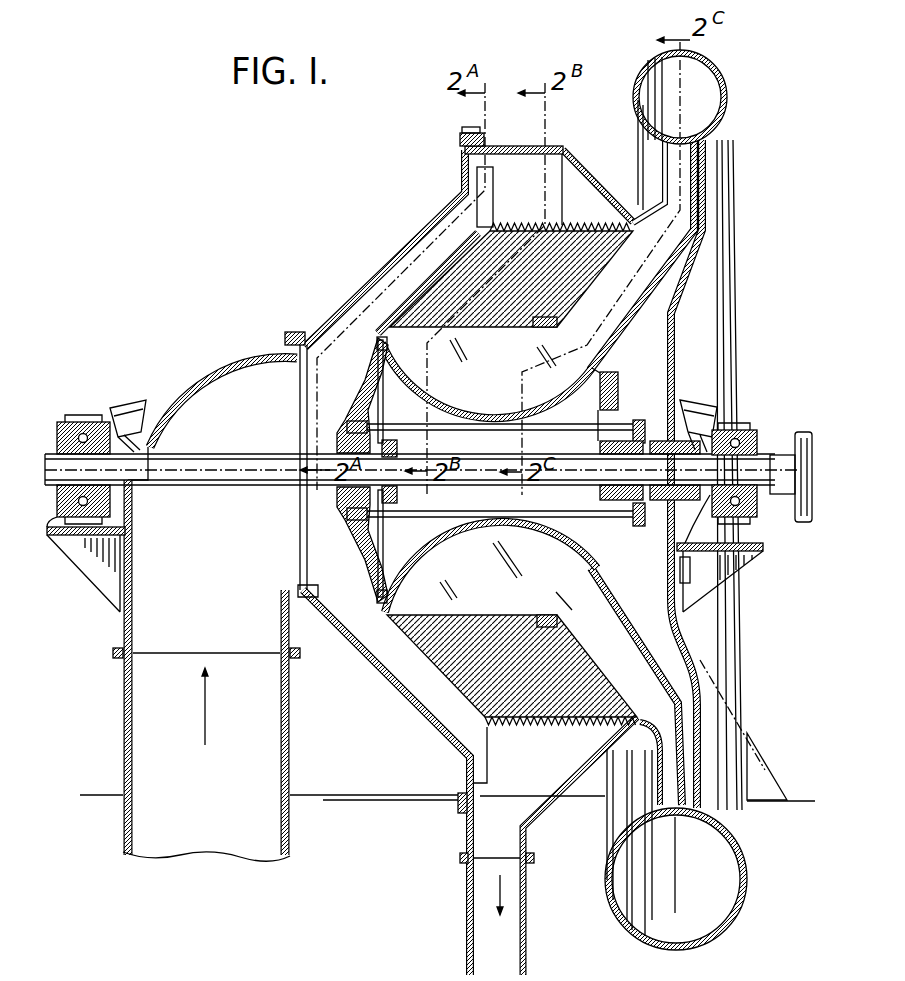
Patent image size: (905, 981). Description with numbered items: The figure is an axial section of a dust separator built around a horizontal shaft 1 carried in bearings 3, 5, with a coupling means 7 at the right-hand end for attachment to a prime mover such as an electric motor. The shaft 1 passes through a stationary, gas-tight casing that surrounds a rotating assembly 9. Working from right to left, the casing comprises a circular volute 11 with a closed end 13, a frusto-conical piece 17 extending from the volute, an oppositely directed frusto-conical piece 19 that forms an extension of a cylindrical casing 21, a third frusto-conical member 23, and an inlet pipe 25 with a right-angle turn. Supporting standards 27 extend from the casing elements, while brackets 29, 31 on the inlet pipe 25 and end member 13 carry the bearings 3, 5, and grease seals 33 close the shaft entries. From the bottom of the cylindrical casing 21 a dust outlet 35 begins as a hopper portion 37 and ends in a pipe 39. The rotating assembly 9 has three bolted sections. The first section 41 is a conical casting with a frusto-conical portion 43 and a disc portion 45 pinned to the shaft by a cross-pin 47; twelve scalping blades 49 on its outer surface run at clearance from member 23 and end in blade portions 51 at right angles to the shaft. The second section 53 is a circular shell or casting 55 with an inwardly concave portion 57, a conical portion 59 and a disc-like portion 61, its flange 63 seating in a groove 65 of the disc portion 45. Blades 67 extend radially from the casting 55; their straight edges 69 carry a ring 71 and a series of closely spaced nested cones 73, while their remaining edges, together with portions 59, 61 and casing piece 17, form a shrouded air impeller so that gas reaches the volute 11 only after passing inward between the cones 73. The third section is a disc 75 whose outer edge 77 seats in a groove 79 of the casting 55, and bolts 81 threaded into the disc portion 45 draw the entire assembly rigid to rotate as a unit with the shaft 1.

The shaft 1 is at (202, 463).
The bearing 3 is at (77, 433).
The bearing 5 is at (740, 437).
The coupling means 7 is at (797, 433).
The rotating assembly 9 is at (588, 348).
The circular volute 11 is at (717, 95).
The closed end 13 is at (677, 352).
The frusto-conical piece 17 is at (600, 263).
The frusto-conical piece 19 is at (582, 183).
The cylindrical casing 21 is at (505, 150).
The third frusto-conical member 23 is at (428, 255).
The inlet pipe 25 is at (217, 387).
The supporting standards 27 is at (353, 735).
The bracket 29 is at (93, 560).
The bracket 31 is at (730, 560).
The grease seal 33 is at (133, 410).
The dust outlet 35 is at (490, 835).
The hopper portion 37 is at (530, 820).
The pipe 39 is at (512, 903).
The first section 41 is at (360, 387).
The frusto-conical portion 43 is at (417, 297).
The disc portion 45 is at (367, 540).
The cross-pin 47 is at (370, 445).
The scalping blades 49 is at (430, 250).
The blade portion 51 is at (482, 181).
The second section 53 is at (447, 374).
The shell or casting 55 is at (440, 400).
The inwardly concave portion 57 is at (493, 412).
The conical portion 59 is at (637, 313).
The disc-like portion 61 is at (700, 178).
The flange 63 is at (380, 350).
The groove 65 is at (380, 347).
The blades 67 is at (668, 240).
The straight edges 69 is at (450, 327).
The ring 71 is at (535, 330).
The nested cones 73 is at (540, 228).
The disc 75 is at (600, 393).
The outer edge 77 is at (605, 378).
The groove 79 is at (600, 360).
The bolts 81 is at (523, 428).